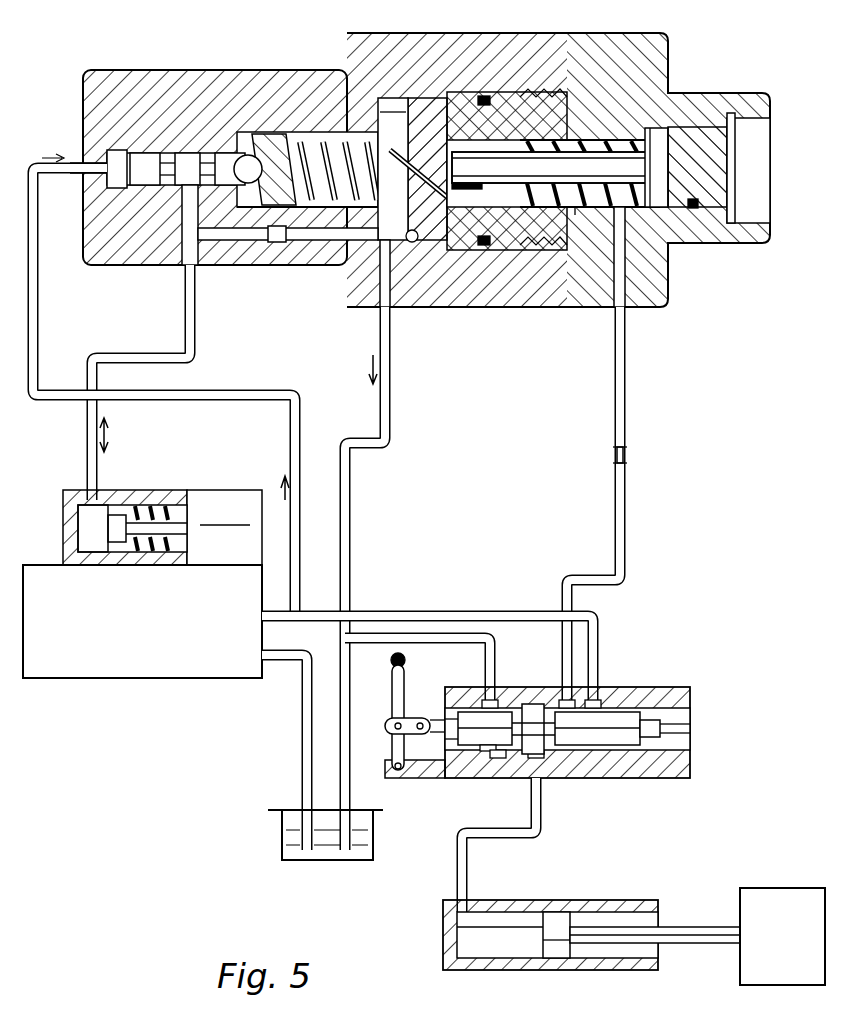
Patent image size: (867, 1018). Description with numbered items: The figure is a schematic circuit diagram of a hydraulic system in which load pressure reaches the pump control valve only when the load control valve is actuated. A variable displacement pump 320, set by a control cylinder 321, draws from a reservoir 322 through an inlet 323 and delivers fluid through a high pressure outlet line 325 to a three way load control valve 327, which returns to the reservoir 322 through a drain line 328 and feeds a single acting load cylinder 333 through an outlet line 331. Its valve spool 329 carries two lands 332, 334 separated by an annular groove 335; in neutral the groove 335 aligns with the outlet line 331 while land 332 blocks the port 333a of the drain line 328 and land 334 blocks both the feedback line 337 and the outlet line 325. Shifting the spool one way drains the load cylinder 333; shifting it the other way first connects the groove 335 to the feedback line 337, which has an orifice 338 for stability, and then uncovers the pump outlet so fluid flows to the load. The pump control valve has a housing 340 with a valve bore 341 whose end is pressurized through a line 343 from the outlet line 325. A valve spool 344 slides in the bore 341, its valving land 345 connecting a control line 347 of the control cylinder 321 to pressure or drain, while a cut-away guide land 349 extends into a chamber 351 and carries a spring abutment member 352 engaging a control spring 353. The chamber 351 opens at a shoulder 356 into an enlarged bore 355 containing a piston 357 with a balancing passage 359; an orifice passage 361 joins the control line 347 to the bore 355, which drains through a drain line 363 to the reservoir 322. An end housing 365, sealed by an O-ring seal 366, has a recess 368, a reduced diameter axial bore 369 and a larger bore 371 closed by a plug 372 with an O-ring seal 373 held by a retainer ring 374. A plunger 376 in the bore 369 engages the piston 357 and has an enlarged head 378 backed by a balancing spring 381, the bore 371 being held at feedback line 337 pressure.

The pump 320 is at (125, 678).
The control cylinder 321 is at (78, 522).
The reservoir 322 is at (294, 860).
The inlet 323 is at (302, 740).
The high pressure outlet line 325 is at (280, 620).
The load control valve 327 is at (690, 710).
The drain line 328 is at (438, 640).
The valve spool 329 is at (437, 718).
The outlet line 331 is at (522, 835).
The land 332 is at (460, 748).
The load cylinder 333 is at (482, 950).
The port 333a is at (498, 760).
The land 334 is at (592, 752).
The annular groove 335 is at (533, 710).
The feedback line 337 is at (626, 560).
The orifice 338 is at (626, 455).
The housing 340 is at (172, 72).
The valve bore 341 is at (122, 185).
The line 343 is at (40, 300).
The valve spool 344 is at (142, 160).
The valving land 345 is at (185, 158).
The control line 347 is at (196, 316).
The guide land 349 is at (242, 158).
The chamber 351 is at (330, 140).
The spring abutment member 352 is at (268, 130).
The control spring 353 is at (345, 208).
The enlarged bore 355 is at (416, 242).
The shoulder 356 is at (393, 98).
The piston 357 is at (437, 100).
The passage 359 is at (557, 173).
The orifice passage 361 is at (283, 244).
The drain line 363 is at (390, 360).
The end housing 365 is at (680, 44).
The O-ring seal 366 is at (505, 95).
The recess 368 is at (488, 140).
The reduced diameter axial bore 369 is at (500, 185).
The larger bore 371 is at (566, 207).
The plug 372 is at (720, 162).
The O-ring seal 373 is at (696, 210).
The retainer ring 374 is at (736, 210).
The plunger 376 is at (580, 177).
The enlarged head 378 is at (665, 128).
The balancing spring 381 is at (602, 140).